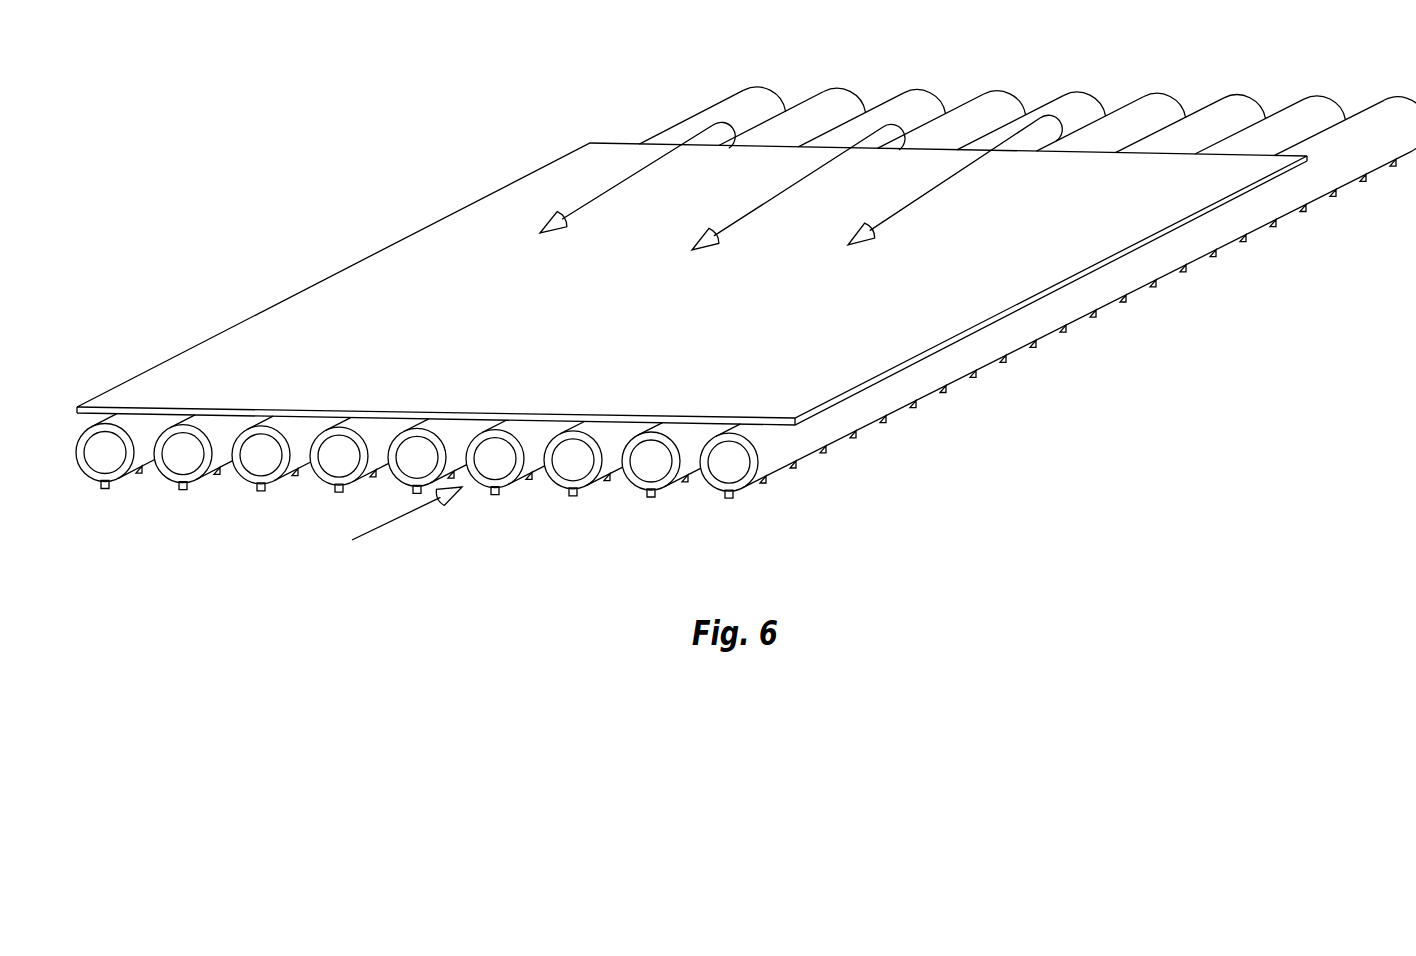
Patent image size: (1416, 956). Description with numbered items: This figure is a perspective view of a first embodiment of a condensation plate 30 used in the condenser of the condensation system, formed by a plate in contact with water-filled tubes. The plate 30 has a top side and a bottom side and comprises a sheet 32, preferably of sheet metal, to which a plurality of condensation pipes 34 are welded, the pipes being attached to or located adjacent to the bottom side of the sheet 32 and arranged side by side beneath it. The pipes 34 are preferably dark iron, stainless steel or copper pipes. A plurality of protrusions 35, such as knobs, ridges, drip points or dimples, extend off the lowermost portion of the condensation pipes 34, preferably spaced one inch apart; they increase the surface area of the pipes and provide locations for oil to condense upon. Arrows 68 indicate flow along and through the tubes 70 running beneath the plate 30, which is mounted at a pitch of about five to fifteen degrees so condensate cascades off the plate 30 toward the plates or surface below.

The condensation plate 30 is at (320, 322).
The sheet 32 is at (427, 243).
The condensation pipe 34 is at (112, 489).
The protrusion 35 is at (337, 492).
The fluid flow direction arrows 68 is at (605, 192).
The tubes 70 is at (955, 86).